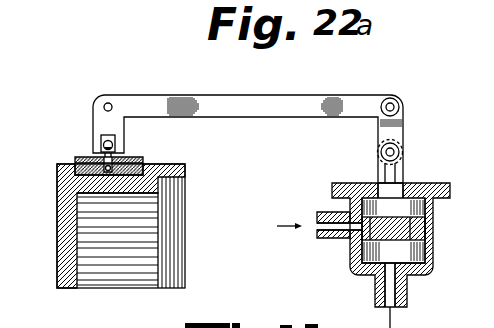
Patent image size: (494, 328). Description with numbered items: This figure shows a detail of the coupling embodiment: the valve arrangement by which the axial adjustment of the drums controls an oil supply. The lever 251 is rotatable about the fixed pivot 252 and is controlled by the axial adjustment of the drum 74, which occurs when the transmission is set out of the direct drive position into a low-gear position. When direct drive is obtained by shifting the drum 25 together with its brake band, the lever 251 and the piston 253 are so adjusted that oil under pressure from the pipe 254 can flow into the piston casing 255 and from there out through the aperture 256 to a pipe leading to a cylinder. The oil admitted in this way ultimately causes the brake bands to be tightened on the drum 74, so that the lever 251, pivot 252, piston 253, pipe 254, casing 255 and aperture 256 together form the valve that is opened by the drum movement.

The drum 25 is at (57, 197).
The drum 74 is at (80, 157).
The lever 251 is at (282, 95).
The fixed pivot 252 is at (111, 104).
The piston 253 is at (426, 237).
The pipe 254 is at (312, 228).
The piston casing 255 is at (352, 265).
The aperture 256 is at (397, 307).